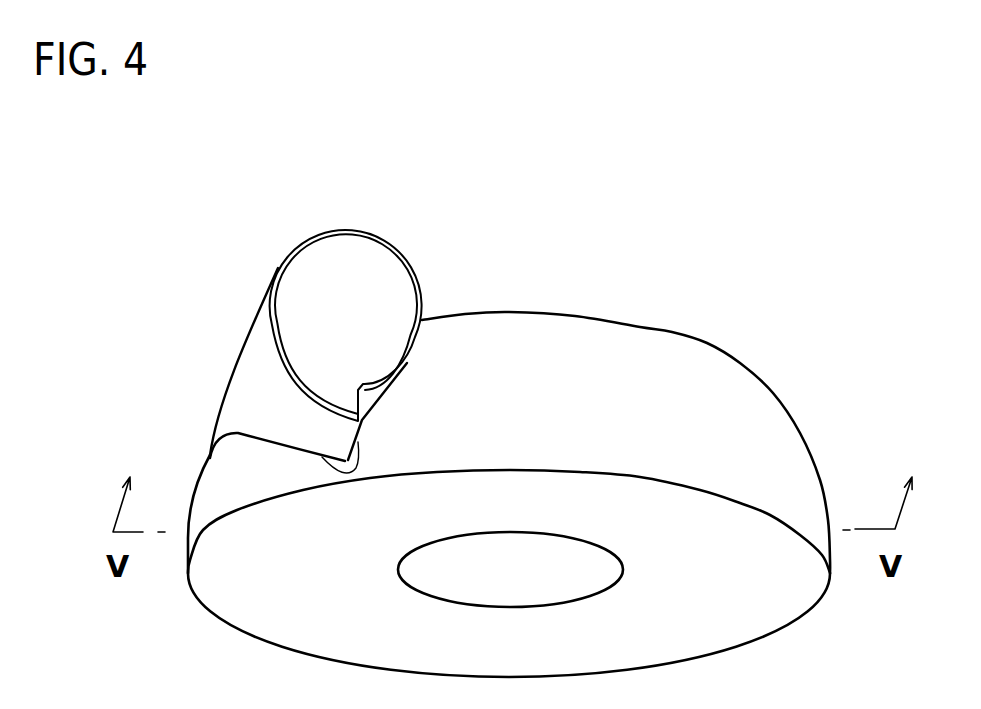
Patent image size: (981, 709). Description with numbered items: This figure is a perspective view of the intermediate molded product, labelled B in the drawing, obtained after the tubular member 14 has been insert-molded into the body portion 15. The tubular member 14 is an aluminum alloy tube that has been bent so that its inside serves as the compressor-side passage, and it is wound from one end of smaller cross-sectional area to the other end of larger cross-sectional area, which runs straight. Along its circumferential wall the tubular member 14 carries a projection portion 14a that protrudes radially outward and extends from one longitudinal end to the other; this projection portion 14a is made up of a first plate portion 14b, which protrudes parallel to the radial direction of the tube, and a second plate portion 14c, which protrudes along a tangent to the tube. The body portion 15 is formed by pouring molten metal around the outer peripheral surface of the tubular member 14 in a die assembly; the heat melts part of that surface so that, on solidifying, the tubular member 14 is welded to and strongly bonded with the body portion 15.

The ball-shaped body B is at (672, 333).
The tubular member 14 is at (385, 235).
The projection portion 14a is at (228, 370).
The first plate portion 14b is at (335, 462).
The second plate portion 14c is at (307, 417).
The body portion 15 is at (790, 513).